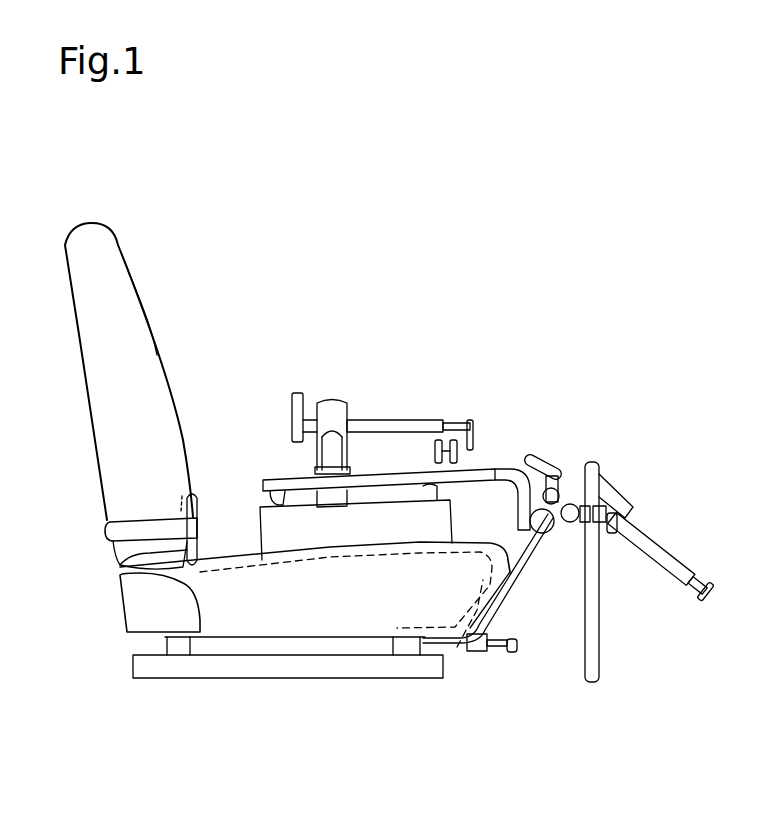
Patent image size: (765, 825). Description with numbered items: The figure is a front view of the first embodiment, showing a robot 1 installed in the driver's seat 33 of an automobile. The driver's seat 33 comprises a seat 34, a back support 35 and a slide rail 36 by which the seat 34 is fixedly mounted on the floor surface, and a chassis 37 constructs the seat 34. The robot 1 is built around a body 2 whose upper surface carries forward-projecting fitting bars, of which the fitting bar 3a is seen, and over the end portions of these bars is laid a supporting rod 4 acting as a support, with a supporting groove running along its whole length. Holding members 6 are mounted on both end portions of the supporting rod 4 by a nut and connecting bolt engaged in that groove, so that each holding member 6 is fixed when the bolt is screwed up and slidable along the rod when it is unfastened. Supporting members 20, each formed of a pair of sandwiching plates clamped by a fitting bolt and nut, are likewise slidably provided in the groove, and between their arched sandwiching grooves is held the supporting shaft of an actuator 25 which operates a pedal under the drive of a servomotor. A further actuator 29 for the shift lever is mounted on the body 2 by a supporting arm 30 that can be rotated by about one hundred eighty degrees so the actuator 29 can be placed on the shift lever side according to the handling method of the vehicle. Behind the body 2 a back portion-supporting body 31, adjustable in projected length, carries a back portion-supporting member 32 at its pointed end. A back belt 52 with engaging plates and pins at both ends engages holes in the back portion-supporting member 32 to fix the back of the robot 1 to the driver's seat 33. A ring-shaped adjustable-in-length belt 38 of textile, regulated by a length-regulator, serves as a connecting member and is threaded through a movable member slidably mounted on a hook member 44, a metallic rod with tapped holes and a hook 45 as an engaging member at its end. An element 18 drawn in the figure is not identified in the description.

The robot 1 is at (437, 408).
The body 2 is at (345, 532).
The fitting bar 3a is at (490, 468).
The supporting rod 4 is at (580, 468).
The holding member 6 is at (571, 536).
The support post 18 is at (592, 672).
The supporting member 20 is at (550, 456).
The actuator 25 is at (648, 550).
The actuator for shift lever 29 is at (383, 422).
The supporting arm 30 is at (328, 415).
The back portion-supporting body 31 is at (120, 563).
The back portion-supporting member 32 is at (192, 510).
The driver's seat 33 is at (145, 277).
The seat 34 is at (223, 615).
The back support 35 is at (147, 355).
The slide rail 36 is at (247, 667).
The chassis 37 is at (457, 647).
The ring-shaped adjustable-in-length belt 38 is at (522, 583).
The hook member 44 is at (492, 652).
The hook 45 is at (380, 640).
The back belt 52 is at (127, 528).